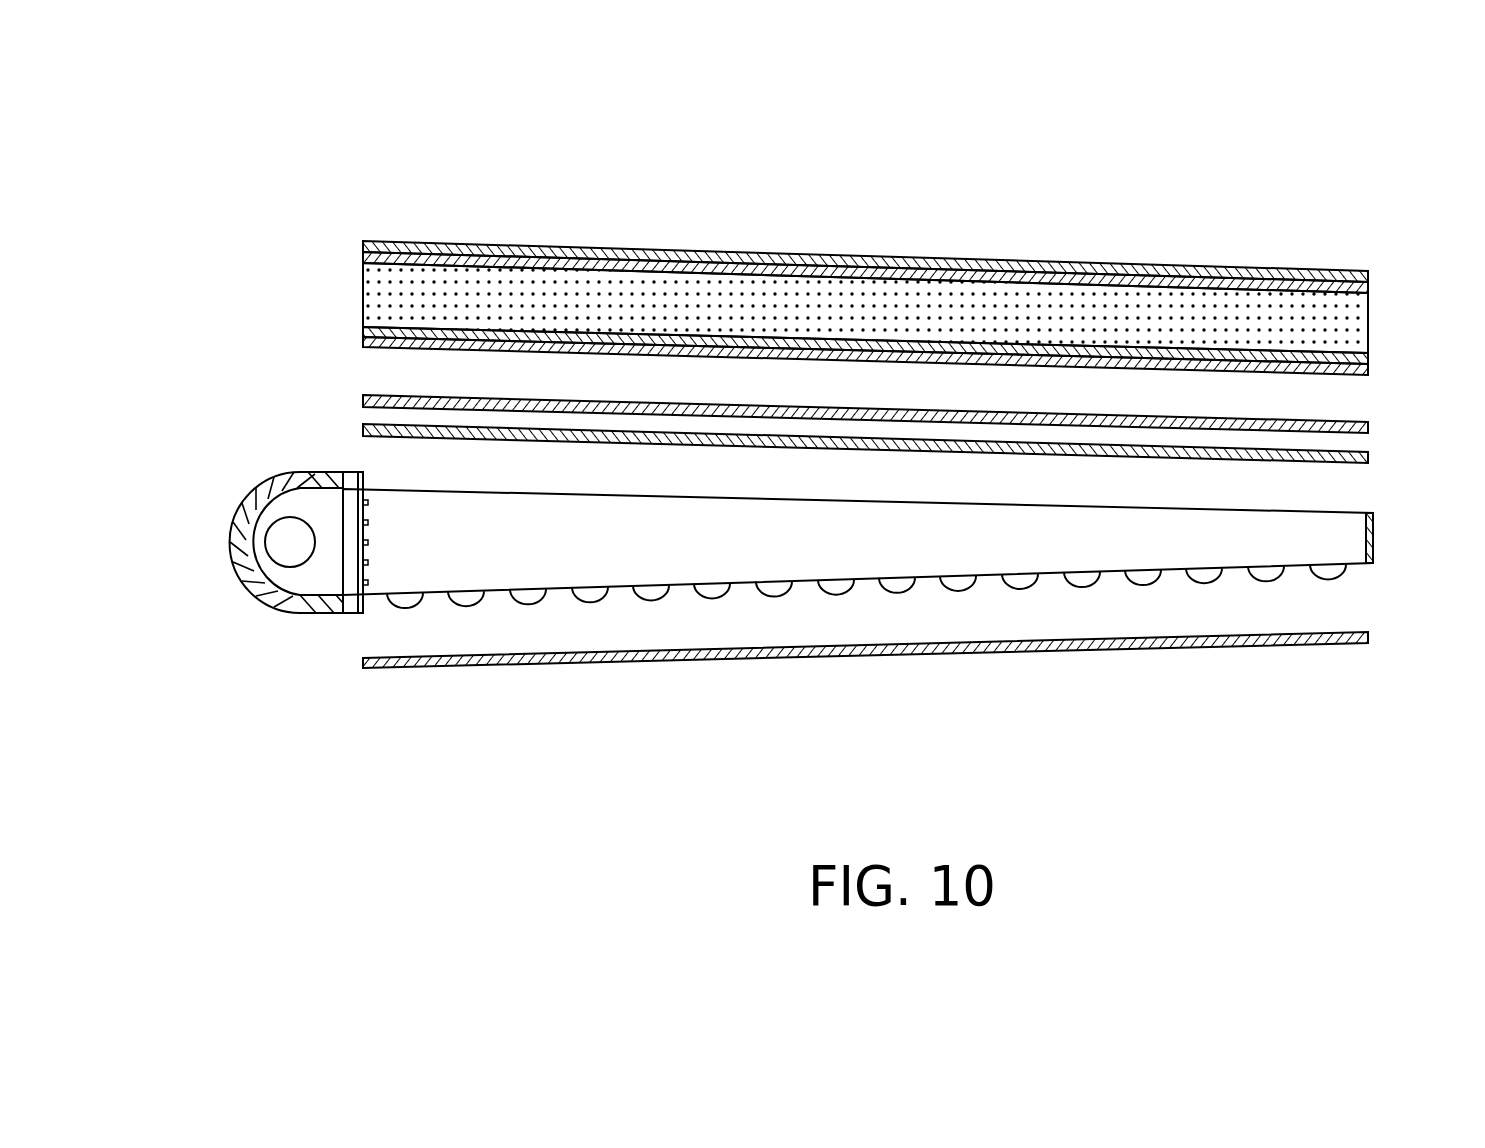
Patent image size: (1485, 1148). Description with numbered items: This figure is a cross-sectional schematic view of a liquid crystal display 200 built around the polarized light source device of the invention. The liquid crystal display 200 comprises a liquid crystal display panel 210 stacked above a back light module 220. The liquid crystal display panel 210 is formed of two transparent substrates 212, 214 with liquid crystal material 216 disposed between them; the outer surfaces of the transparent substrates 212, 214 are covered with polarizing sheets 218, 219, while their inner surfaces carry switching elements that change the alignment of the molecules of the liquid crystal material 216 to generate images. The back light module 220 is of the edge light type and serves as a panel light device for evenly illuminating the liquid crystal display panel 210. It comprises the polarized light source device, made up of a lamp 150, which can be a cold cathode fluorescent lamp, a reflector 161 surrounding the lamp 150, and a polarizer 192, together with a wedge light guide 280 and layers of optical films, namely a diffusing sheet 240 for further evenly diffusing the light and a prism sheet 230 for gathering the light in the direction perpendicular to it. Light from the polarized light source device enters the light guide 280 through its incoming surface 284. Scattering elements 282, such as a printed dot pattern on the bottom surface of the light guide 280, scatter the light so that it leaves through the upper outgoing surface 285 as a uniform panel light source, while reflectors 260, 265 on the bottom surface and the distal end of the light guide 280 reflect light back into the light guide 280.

The liquid crystal display 200 is at (166, 194).
The liquid crystal display panel 210 is at (856, 288).
The transparent substrate 212 is at (458, 244).
The polarizing sheet 218 is at (685, 251).
The liquid crystal material 216 is at (378, 297).
The transparent substrate 214 is at (406, 338).
The polarizing sheet 219 is at (721, 353).
The prism sheet 230 is at (617, 404).
The diffusing sheet 240 is at (838, 451).
The back light module 220 is at (813, 575).
The outgoing surface 285 is at (888, 626).
The reflector 265 is at (1375, 545).
The wedge light guide 280 is at (866, 681).
The scattering elements 282 is at (897, 582).
The reflector 260 is at (680, 660).
The lamp 150 is at (288, 537).
The reflector 161 is at (298, 603).
The polarizer 192 is at (350, 615).
The incoming surface 284 is at (368, 553).